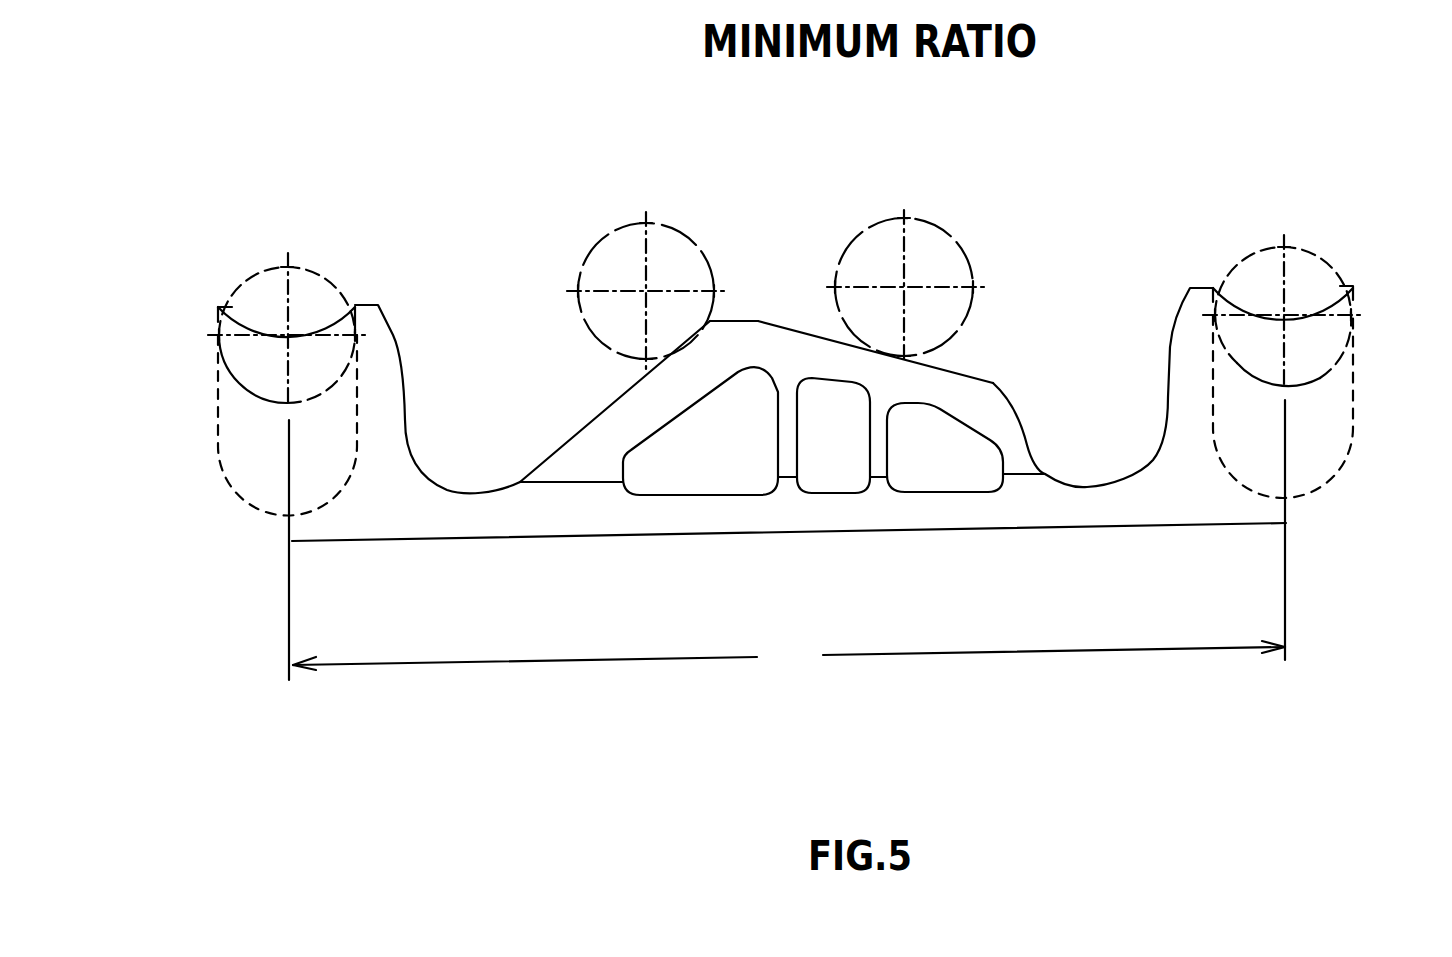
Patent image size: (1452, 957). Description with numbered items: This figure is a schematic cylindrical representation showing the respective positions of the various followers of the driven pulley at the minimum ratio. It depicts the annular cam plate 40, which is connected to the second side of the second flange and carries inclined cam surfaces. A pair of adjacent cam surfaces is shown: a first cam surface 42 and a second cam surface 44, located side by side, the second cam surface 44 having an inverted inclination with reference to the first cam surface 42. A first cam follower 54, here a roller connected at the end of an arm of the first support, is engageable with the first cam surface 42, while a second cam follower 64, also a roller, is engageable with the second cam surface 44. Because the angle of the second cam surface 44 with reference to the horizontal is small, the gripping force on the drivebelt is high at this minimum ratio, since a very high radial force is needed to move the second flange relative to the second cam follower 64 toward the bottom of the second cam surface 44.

The cam plate 40 is at (1035, 528).
The first cam surface 42 is at (576, 435).
The second cam surface 44 is at (993, 385).
The first cam follower 54 is at (610, 258).
The second cam follower 64 is at (947, 257).